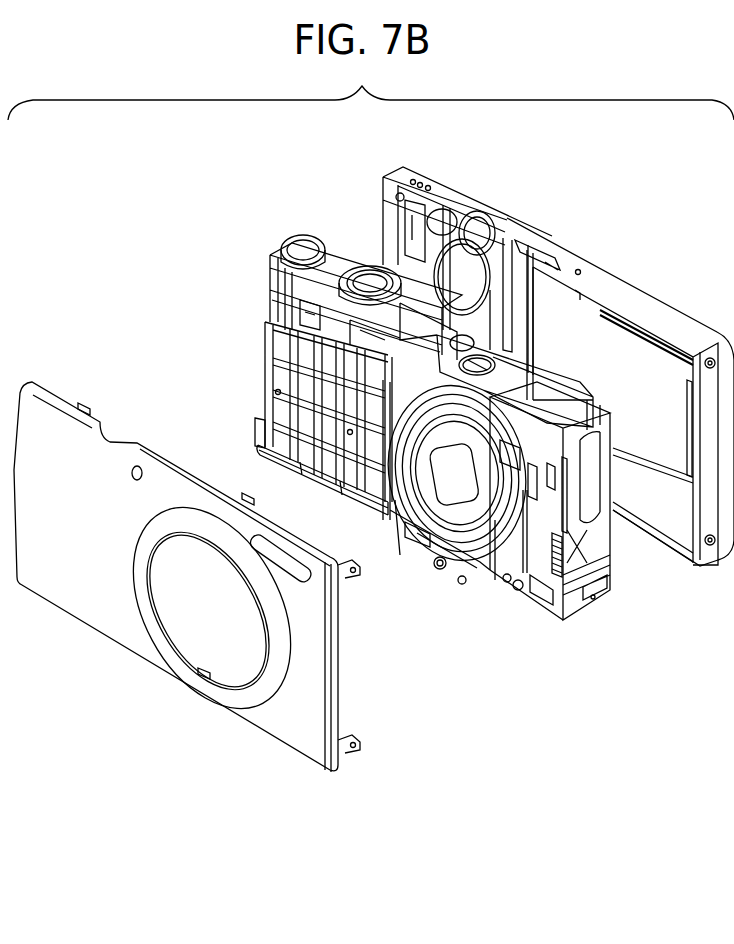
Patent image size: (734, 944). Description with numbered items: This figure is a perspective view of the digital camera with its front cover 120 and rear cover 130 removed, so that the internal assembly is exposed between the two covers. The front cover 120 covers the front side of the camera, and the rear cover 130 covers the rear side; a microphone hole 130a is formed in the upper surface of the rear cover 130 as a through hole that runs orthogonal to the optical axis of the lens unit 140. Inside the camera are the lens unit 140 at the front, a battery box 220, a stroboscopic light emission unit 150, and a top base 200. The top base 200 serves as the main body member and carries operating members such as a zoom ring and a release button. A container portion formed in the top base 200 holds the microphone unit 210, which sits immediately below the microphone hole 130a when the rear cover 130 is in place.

The front cover 120 is at (109, 616).
The rear cover 130 is at (413, 170).
The microphone hole 130a is at (580, 267).
The lens unit 140 is at (462, 510).
The stroboscopic light emission unit 150 is at (590, 580).
The top base 200 is at (340, 240).
The microphone unit 210 is at (265, 340).
The battery box 220 is at (297, 405).